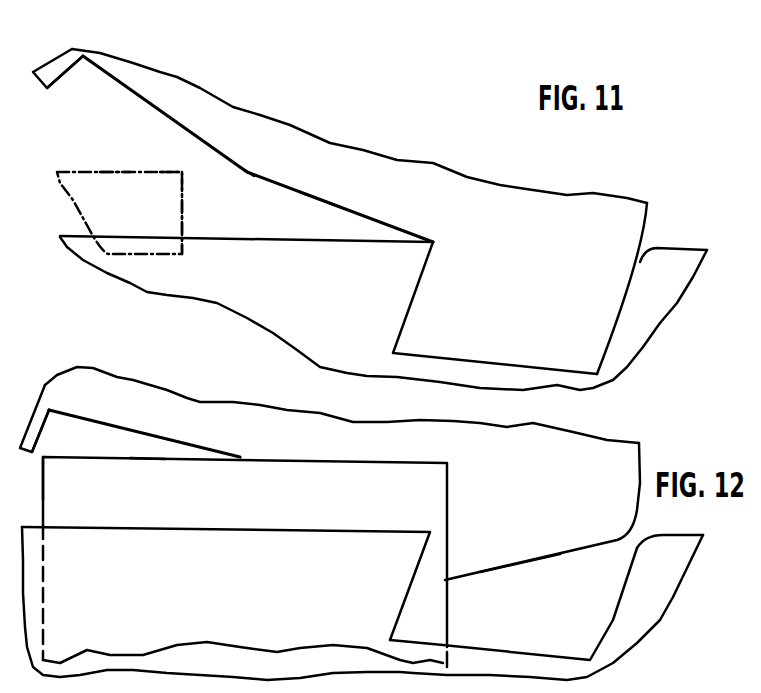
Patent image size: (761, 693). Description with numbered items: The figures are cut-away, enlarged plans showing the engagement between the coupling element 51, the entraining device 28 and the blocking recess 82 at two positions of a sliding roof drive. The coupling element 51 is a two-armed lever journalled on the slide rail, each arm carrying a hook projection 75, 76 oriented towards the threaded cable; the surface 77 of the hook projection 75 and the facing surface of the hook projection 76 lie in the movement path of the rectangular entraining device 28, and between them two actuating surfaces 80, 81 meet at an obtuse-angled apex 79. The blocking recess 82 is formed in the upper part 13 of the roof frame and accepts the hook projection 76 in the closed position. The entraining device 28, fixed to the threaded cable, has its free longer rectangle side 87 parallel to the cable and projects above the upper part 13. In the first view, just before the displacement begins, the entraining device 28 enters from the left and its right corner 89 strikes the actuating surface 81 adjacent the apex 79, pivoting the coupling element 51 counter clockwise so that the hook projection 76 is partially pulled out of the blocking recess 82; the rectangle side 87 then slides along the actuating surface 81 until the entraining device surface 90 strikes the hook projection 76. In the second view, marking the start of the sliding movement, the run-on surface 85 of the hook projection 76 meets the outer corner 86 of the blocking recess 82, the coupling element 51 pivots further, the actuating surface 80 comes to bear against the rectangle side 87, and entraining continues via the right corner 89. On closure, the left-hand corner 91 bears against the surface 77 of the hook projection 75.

In FIG. 11, the upper part 13 is at (311, 303).
In FIG. 12, the upper part 13 is at (234, 603).
In FIG. 11, the entraining device 28 is at (75, 192).
In FIG. 12, the entraining device 28 is at (226, 506).
In FIG. 11, the coupling element 51 is at (530, 180).
In FIG. 12, the coupling element 51 is at (220, 395).
In FIG. 11, the hook projection 75 is at (55, 67).
In FIG. 12, the hook projection 75 is at (33, 421).
In FIG. 11, the hook projection 76 is at (509, 308).
In FIG. 12, the hook projection 76 is at (532, 508).
In FIG. 11, the surface 77 is at (67, 75).
In FIG. 12, the surface 77 is at (37, 438).
In FIG. 11, the apex 79 is at (247, 174).
In FIG. 11, the actuating surface 80 is at (177, 128).
In FIG. 12, the actuating surface 80 is at (83, 420).
In FIG. 11, the actuating surface 81 is at (320, 201).
In FIG. 12, the blocking recess 82 is at (583, 625).
In FIG. 12, the run-on surface 85 is at (517, 566).
In FIG. 11, the outer corner 86 is at (650, 258).
In FIG. 12, the outer corner 86 is at (642, 546).
In FIG. 11, the rectangle side 87 is at (115, 173).
In FIG. 12, the rectangle side 87 is at (145, 461).
In FIG. 11, the right corner 89 is at (180, 174).
In FIG. 11, the entraining device surface 90 is at (182, 221).
In FIG. 12, the left-hand corner 91 is at (50, 461).